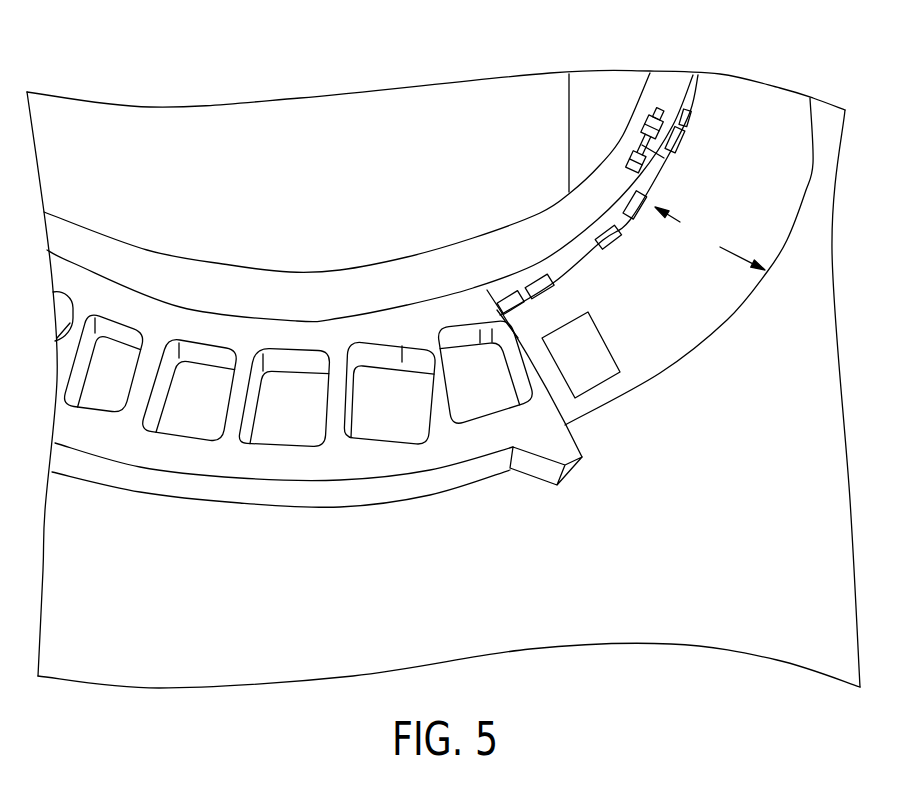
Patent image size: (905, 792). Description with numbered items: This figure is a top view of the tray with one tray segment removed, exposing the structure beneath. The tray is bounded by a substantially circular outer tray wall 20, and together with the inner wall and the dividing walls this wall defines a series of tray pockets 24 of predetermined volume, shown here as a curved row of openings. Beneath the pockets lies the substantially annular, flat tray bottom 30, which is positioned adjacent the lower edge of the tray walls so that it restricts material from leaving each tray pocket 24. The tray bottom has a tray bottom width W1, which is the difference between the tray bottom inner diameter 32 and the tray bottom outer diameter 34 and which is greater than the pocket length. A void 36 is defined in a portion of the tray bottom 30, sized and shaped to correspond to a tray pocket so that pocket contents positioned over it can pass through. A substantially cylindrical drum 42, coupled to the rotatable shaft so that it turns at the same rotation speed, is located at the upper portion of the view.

The outer tray wall 20 is at (105, 437).
The tray pocket 24 is at (484, 395).
The tray bottom 30 is at (664, 331).
The tray bottom inner diameter 32 is at (694, 73).
The tray bottom outer diameter 34 is at (813, 163).
The void 36 is at (594, 367).
The drum 42 is at (590, 87).
The tray bottom width W1 is at (710, 238).